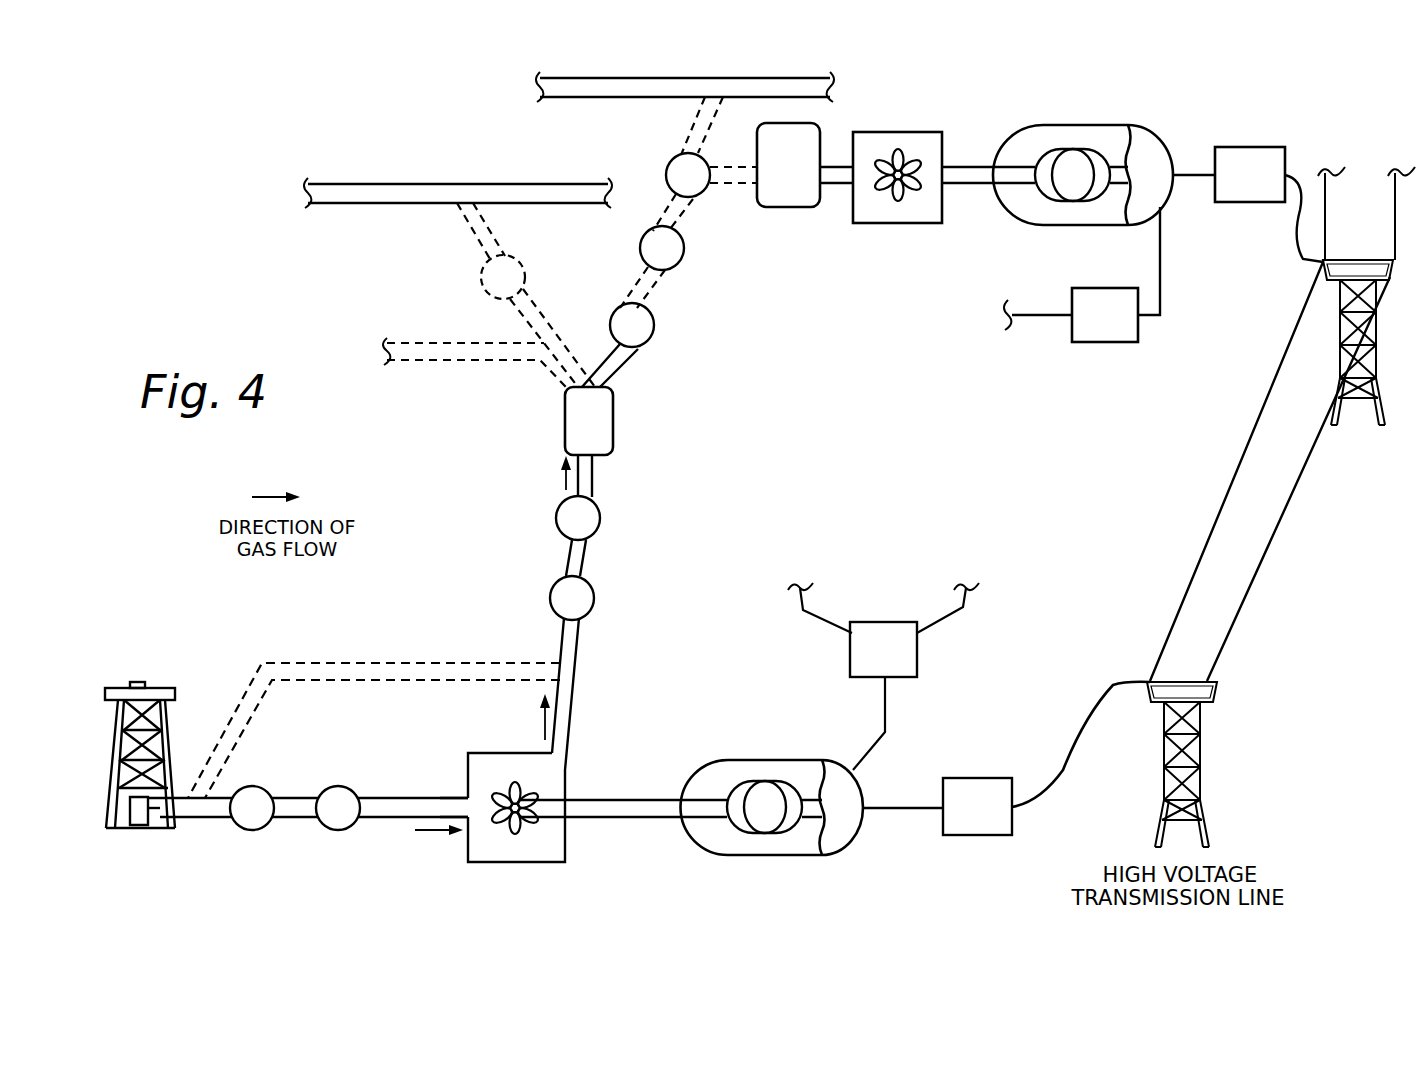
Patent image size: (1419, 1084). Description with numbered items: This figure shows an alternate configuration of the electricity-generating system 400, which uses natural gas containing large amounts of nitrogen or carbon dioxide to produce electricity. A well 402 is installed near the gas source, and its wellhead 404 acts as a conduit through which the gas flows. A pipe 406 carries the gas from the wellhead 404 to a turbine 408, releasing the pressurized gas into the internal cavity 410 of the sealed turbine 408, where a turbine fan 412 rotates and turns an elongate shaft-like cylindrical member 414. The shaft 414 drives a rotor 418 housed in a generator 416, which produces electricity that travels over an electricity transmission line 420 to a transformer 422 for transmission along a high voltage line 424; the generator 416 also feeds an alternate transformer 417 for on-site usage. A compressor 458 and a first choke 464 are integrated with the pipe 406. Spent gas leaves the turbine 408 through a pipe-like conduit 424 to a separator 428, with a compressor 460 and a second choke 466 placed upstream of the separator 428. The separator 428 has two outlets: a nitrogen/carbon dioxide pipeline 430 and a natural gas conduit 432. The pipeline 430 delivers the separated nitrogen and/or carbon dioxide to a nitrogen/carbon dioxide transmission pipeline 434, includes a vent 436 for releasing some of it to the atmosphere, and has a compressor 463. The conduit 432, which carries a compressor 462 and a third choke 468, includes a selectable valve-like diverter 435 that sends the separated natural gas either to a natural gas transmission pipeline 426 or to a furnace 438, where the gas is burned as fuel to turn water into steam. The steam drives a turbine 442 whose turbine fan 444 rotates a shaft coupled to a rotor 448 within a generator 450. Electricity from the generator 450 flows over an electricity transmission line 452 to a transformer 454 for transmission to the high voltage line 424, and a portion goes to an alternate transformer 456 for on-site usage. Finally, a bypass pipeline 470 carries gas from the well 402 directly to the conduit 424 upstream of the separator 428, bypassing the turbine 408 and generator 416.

The system 400 is at (218, 222).
The well 402 is at (175, 732).
The wellhead 404 is at (143, 838).
The pipe 406 is at (386, 818).
The turbine 408 is at (500, 752).
The internal cavity 410 is at (468, 810).
The turbine fan 412 is at (523, 835).
The elongate shaft-like cylindrical member 414 is at (607, 818).
The generator 416 is at (767, 760).
The alternate transformer 417 is at (850, 657).
The generator rotor 418 is at (765, 835).
The electricity transmission line 420 is at (916, 812).
The transformer 422 is at (975, 778).
The high voltage line / pipe-like conduit 424 is at (574, 717).
The natural gas transmission pipeline 426 is at (574, 102).
The separator 428 is at (613, 422).
The nitrogen/carbon dioxide pipeline 430 is at (547, 341).
The natural gas conduit 432 is at (627, 367).
The nitrogen/carbon dioxide transmission pipeline 434 is at (385, 205).
The selectable valve-like diverter 435 is at (667, 175).
The vent 436 is at (480, 365).
The furnace 438 is at (790, 210).
The turbine 442 is at (895, 131).
The turbine fan 444 is at (890, 203).
The rotor 448 is at (1073, 203).
The generator 450 is at (1085, 126).
The electricity transmission line 452 is at (1194, 178).
The transformer 454 is at (1247, 146).
The alternate transformer 456 is at (1107, 346).
The compressor 458 is at (268, 787).
The compressor 460 is at (602, 528).
The compressor 462 is at (684, 252).
The compressor 463 is at (483, 277).
The first choke 464 is at (320, 833).
The second choke 466 is at (550, 600).
The third choke 468 is at (657, 325).
The bypass pipeline 470 is at (400, 662).